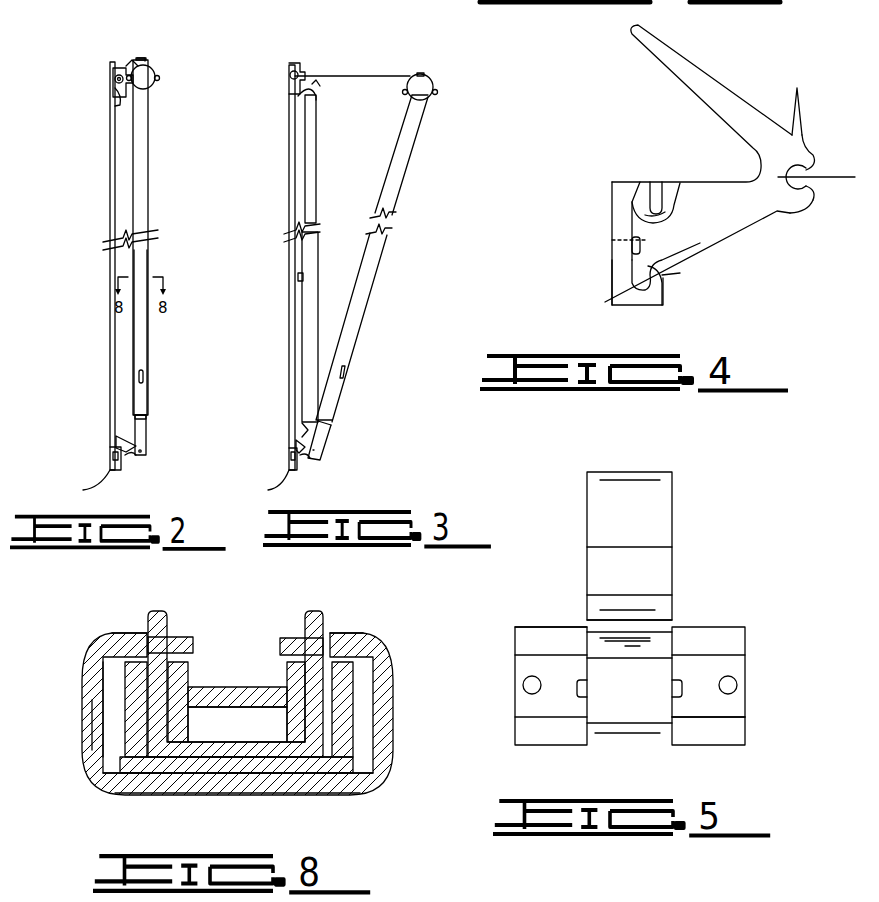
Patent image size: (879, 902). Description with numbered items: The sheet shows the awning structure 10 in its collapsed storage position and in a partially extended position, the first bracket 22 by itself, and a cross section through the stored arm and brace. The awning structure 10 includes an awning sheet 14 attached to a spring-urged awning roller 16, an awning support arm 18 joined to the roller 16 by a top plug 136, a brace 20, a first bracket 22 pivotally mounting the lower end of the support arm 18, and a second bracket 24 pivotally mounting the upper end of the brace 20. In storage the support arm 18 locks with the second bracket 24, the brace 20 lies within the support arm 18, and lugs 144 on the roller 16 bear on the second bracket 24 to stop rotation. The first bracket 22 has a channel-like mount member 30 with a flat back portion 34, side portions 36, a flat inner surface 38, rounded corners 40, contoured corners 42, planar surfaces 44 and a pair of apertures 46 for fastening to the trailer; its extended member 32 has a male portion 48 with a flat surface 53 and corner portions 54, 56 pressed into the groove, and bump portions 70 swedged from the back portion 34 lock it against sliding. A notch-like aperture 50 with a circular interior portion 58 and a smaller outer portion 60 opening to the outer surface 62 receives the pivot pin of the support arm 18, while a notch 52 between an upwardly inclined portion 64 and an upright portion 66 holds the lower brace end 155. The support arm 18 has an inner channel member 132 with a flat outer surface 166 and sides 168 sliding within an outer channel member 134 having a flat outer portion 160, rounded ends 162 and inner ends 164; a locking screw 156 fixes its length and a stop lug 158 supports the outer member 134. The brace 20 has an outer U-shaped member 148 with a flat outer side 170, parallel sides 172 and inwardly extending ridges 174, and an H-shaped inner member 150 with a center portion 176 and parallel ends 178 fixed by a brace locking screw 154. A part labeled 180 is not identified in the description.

In FIG. 2, the awning structure 10 is at (188, 55).
In FIG. 3, the awning structure 10 is at (487, 72).
In FIG. 3, the awning sheet 14 is at (374, 72).
In FIG. 2, the awning roller 16 is at (157, 82).
In FIG. 3, the awning roller 16 is at (445, 96).
In FIG. 2, the awning support arm 18 is at (152, 192).
In FIG. 3, the awning support arm 18 is at (405, 207).
In FIG. 8, the awning support arm 18 is at (390, 650).
In FIG. 2, the brace 20 is at (112, 266).
In FIG. 3, the brace 20 is at (325, 169).
In FIG. 8, the brace 20 is at (323, 604).
In FIG. 2, the first bracket 22 is at (160, 480).
In FIG. 3, the first bracket 22 is at (350, 463).
In FIG. 4, the first bracket 22 is at (806, 84).
In FIG. 5, the first bracket 22 is at (767, 569).
In FIG. 2, the second bracket 24 is at (118, 103).
In FIG. 3, the second bracket 24 is at (311, 74).
In FIG. 2, the mount member 30 is at (115, 470).
In FIG. 3, the mount member 30 is at (294, 473).
In FIG. 4, the mount member 30 is at (606, 227).
In FIG. 5, the mount member 30 is at (768, 653).
In FIG. 2, the extended member 32 is at (140, 460).
In FIG. 3, the extended member 32 is at (318, 466).
In FIG. 4, the extended member 32 is at (749, 222).
In FIG. 5, the extended member 32 is at (703, 488).
In FIG. 4, the flat back portion 34 is at (612, 277).
In FIG. 5, the flat back portion 34 is at (730, 704).
In FIG. 4, the side portions 36 is at (620, 182).
In FIG. 5, the side portions 36 is at (722, 627).
In FIG. 4, the flat inner surface 38 is at (630, 212).
In FIG. 5, the flat inner surface 38 is at (540, 668).
In FIG. 4, the rounded corners 40 is at (640, 200).
In FIG. 4, the contoured corner portions 42 is at (648, 190).
In FIG. 5, the contoured corner portions 42 is at (720, 660).
In FIG. 5, the planar surfaces 44 is at (525, 630).
In FIG. 5, the apertures 46 is at (735, 685).
In FIG. 4, the male portion 48 is at (640, 241).
In FIG. 4, the notch-like aperture 50 is at (816, 162).
In FIG. 5, the notch-like aperture 50 is at (680, 626).
In FIG. 4, the notch 52 is at (784, 75).
In FIG. 5, the notch 52 is at (695, 540).
In FIG. 4, the flat surface 53 is at (612, 236).
In FIG. 4, the corner portion 54 is at (690, 195).
In FIG. 4, the corner portion 56 is at (670, 205).
In FIG. 4, the circular interior portion 58 is at (827, 176).
In FIG. 4, the outer portion 60 is at (813, 190).
In FIG. 5, the outer portion 60 is at (605, 620).
In FIG. 4, the outer surface 62 is at (812, 202).
In FIG. 5, the outer surface 62 is at (660, 610).
In FIG. 2, the upwardly inclined portion 64 is at (120, 440).
In FIG. 3, the upwardly inclined portion 64 is at (297, 445).
In FIG. 4, the upwardly inclined portion 64 is at (670, 55).
In FIG. 5, the upwardly inclined portion 64 is at (612, 485).
In FIG. 4, the upright portion 66 is at (802, 104).
In FIG. 5, the upright portion 66 is at (595, 557).
In FIG. 4, the bump portions 70 is at (632, 253).
In FIG. 5, the bump portions 70 is at (580, 700).
In FIG. 2, the inner channel member 132 is at (147, 437).
In FIG. 3, the inner channel member 132 is at (322, 446).
In FIG. 8, the inner channel member 132 is at (155, 735).
In FIG. 2, the outer channel member 134 is at (143, 263).
In FIG. 3, the outer channel member 134 is at (360, 301).
In FIG. 8, the outer channel member 134 is at (113, 780).
In FIG. 2, the top plug 136 is at (148, 59).
In FIG. 3, the top plug 136 is at (428, 75).
In FIG. 2, the lugs 144 is at (130, 70).
In FIG. 3, the brace outer member 148 is at (320, 248).
In FIG. 8, the brace outer member 148 is at (313, 637).
In FIG. 3, the brace inner member 150 is at (317, 134).
In FIG. 8, the brace inner member 150 is at (190, 687).
In FIG. 3, the brace locking screw 154 is at (298, 277).
In FIG. 3, the brace end 155 is at (305, 427).
In FIG. 3, the support arm locking screw 156 is at (345, 376).
In FIG. 2, the stop lug 158 is at (148, 420).
In FIG. 3, the stop lug 158 is at (326, 430).
In FIG. 8, the flat outer portion 160 is at (255, 782).
In FIG. 8, the rounded ends 162 is at (383, 716).
In FIG. 8, the ends 164 is at (137, 636).
In FIG. 8, the flat outer surface 166 is at (237, 767).
In FIG. 8, the sides 168 is at (347, 700).
In FIG. 8, the flat outer side 170 is at (253, 752).
In FIG. 8, the parallel sides 172 is at (317, 727).
In FIG. 8, the inwardly extending ridges 174 is at (172, 637).
In FIG. 8, the center portion 176 is at (235, 687).
In FIG. 8, the parallel ends 178 is at (288, 723).
In FIG. 2, the bracket 180 is at (113, 78).
In FIG. 3, the bracket 180 is at (289, 76).